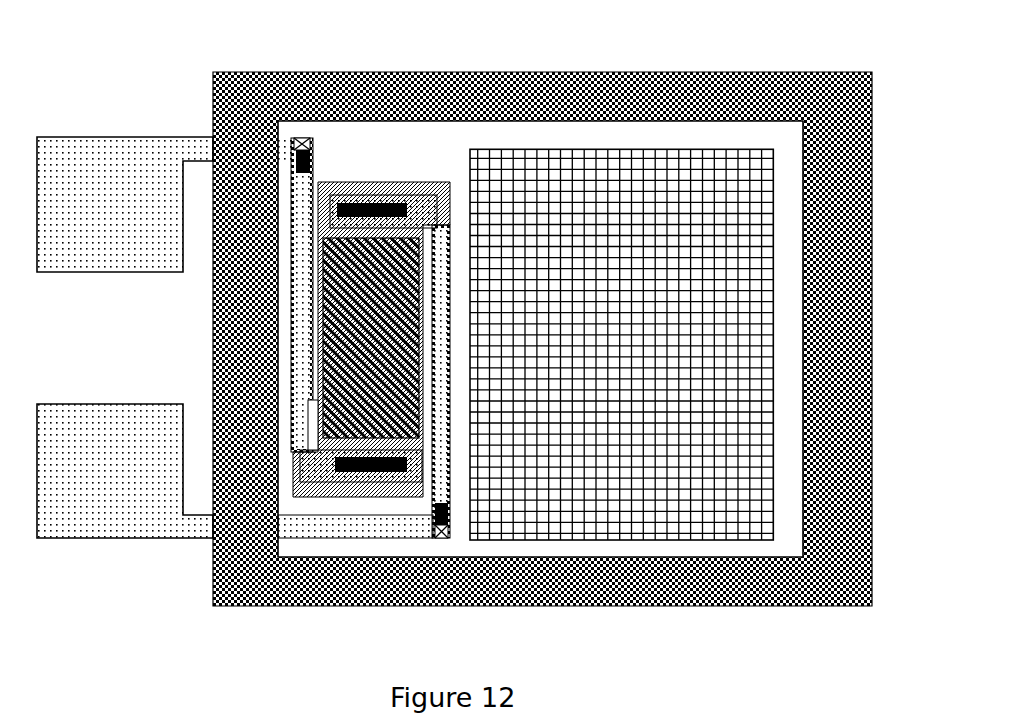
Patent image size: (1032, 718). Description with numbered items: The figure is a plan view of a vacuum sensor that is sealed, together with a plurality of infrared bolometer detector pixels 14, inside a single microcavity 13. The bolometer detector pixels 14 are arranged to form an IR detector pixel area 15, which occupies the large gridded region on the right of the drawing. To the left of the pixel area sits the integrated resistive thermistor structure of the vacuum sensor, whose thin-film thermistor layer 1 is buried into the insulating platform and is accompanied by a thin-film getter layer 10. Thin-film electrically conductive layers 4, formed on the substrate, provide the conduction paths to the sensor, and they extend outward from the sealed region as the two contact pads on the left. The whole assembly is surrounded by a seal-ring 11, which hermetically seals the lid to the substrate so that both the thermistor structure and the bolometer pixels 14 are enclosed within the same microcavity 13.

The thermistor layer 1 is at (359, 339).
The electrically conductive layer 4 is at (120, 420).
The thin-film getter layer 10 is at (355, 395).
The seal-ring 11 is at (233, 312).
The microcavity 13 is at (851, 517).
The infrared bolometer detector pixels 14 is at (757, 347).
The IR detector pixel area 15 is at (786, 197).